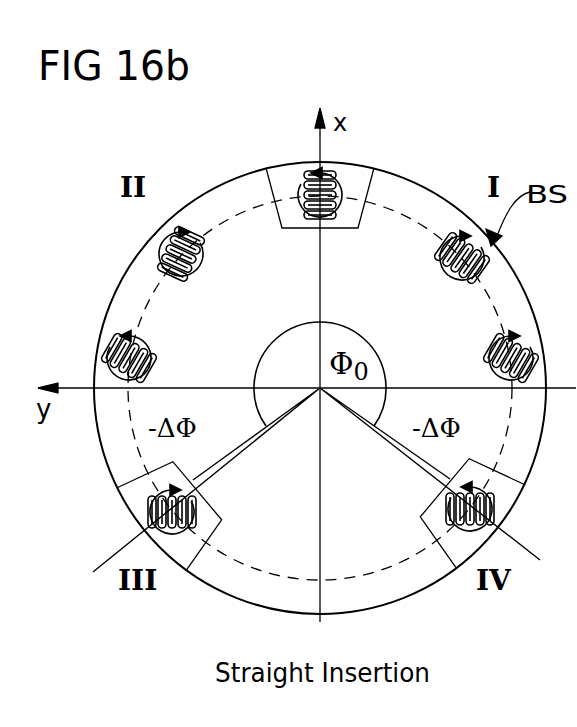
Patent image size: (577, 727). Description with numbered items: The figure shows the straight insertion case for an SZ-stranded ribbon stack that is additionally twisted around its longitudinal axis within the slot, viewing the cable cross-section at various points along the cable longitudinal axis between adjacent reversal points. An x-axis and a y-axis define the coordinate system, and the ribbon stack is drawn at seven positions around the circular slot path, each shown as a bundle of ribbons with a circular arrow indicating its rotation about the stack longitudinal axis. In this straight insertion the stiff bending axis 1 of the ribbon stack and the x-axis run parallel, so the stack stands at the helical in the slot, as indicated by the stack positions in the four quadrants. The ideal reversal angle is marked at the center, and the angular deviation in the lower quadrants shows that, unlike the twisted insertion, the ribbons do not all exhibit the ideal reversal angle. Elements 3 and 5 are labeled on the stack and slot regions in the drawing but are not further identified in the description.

The stiff bending axis 1 is at (306, 172).
The pole shoe / slot 3 is at (284, 228).
The winding bundle 5 is at (316, 222).